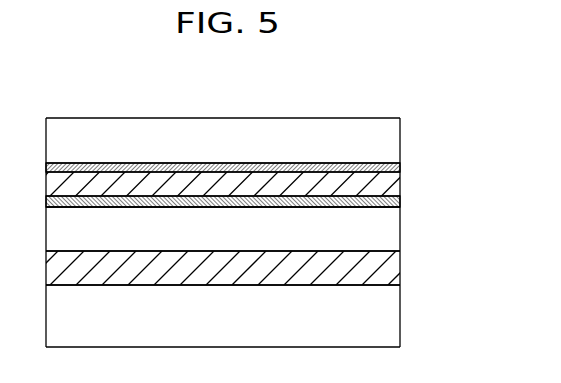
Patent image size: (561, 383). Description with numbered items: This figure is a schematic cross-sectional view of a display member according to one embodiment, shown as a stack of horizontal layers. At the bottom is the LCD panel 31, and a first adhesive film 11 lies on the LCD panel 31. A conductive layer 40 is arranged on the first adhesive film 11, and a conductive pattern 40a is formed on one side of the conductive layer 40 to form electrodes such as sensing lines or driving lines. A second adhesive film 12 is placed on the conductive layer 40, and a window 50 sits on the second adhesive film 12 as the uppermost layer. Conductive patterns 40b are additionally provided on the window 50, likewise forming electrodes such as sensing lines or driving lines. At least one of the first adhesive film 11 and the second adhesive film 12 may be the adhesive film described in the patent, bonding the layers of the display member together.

The window 50 is at (392, 133).
The conductive patterns 40b is at (396, 167).
The second adhesive film 12 is at (390, 181).
The conductive pattern 40a is at (396, 201).
The conductive layer 40 is at (392, 225).
The first adhesive film 11 is at (392, 265).
The LCD panel 31 is at (392, 309).